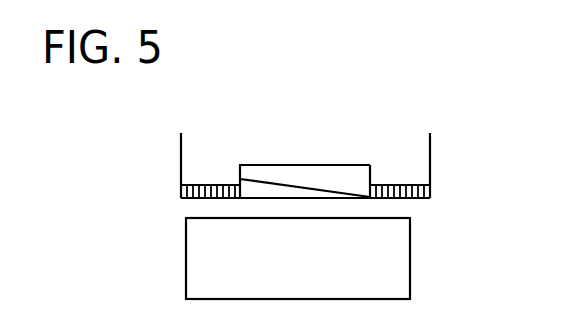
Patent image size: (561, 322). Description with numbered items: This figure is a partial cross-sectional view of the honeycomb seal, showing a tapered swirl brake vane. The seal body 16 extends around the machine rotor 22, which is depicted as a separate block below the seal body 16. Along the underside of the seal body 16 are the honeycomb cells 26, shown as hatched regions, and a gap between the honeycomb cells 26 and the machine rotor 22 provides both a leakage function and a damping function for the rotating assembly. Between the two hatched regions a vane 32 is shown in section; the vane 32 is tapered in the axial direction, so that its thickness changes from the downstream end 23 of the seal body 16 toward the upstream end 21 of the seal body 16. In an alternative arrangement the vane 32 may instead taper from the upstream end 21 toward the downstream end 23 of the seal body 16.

The seal body 16 is at (397, 160).
The upstream end 21 is at (181, 163).
The machine rotor 22 is at (393, 263).
The downstream end 23 is at (430, 163).
The honeycomb cells 26 is at (430, 188).
The vane 32 is at (298, 175).